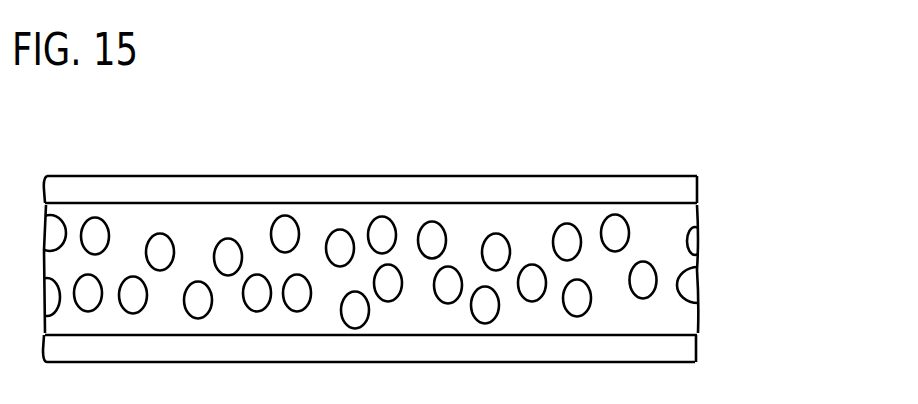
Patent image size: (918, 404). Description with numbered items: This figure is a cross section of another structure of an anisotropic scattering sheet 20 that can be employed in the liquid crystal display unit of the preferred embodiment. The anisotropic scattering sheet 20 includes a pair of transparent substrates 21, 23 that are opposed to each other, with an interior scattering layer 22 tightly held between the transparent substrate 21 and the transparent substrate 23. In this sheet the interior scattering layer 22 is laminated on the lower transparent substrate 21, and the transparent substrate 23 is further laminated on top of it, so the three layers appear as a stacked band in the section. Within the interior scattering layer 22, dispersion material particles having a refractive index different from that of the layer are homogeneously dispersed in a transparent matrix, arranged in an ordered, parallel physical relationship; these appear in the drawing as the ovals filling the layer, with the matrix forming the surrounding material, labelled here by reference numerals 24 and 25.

The anisotropic scattering sheet 20 is at (457, 270).
The transparent substrate 21 is at (426, 348).
The interior scattering layer 22 is at (422, 268).
The transparent substrate 23 is at (683, 190).
The binder resin 24 is at (680, 322).
The particles 25 is at (762, 331).